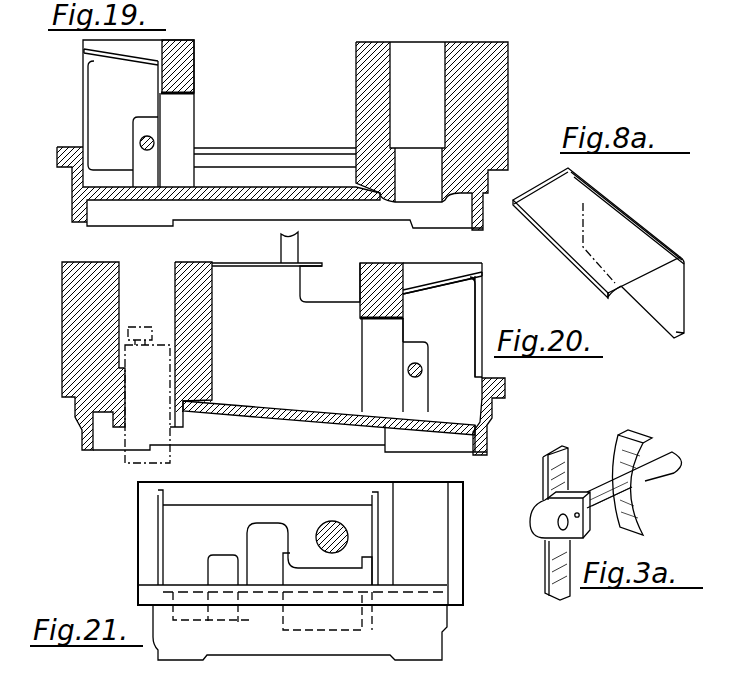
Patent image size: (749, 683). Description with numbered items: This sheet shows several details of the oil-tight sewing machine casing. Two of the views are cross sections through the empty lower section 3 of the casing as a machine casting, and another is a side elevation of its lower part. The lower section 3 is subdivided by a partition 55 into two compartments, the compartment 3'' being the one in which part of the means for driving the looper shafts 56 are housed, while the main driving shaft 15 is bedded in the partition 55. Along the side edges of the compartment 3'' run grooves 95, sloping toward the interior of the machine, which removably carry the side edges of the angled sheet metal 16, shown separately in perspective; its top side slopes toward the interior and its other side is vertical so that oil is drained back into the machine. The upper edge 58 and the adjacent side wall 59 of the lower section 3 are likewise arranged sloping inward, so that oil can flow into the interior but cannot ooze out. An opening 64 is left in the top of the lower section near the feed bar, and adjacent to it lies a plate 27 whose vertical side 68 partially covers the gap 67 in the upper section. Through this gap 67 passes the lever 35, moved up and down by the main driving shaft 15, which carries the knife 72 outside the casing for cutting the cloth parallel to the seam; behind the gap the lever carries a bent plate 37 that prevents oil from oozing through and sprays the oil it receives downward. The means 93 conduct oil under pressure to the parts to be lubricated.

In FIG. 19, the lower section of the casing 3 is at (282, 115).
In FIG. 20, the lower section of the casing 3 is at (283, 344).
In FIG. 21, the lower section of the casing 3 is at (284, 571).
In FIG. 19, the compartment 3'' is at (123, 124).
In FIG. 20, the compartment 3'' is at (442, 337).
In FIG. 21, the main driving shaft 15 is at (319, 531).
In FIG. 8A, the angled sheet metal 16 is at (615, 228).
In FIG. 20, the plate 27 is at (235, 263).
In FIG. 3A, the lever 35 is at (667, 452).
In FIG. 3A, the bent plate 37 is at (635, 436).
In FIG. 19, the partition 55 is at (197, 49).
In FIG. 20, the partition 55 is at (360, 312).
In FIG. 21, the partition 55 is at (274, 492).
In FIG. 19, the looper shafts 56 is at (140, 142).
In FIG. 20, the looper shafts 56 is at (425, 370).
In FIG. 19, the upper edge 58 is at (313, 151).
In FIG. 19, the side wall 59 is at (265, 163).
In FIG. 20, the opening 64 is at (341, 285).
In FIG. 19, the gap 67 is at (311, 0).
In FIG. 20, the vertical side 68 is at (283, 251).
In FIG. 3A, the knife 72 is at (556, 480).
In FIG. 20, the means of conducting oil under pressure 93 is at (125, 457).
In FIG. 19, the grooves 95 is at (143, 65).
In FIG. 20, the grooves 95 is at (434, 282).
In FIG. 21, the grooves 95 is at (166, 493).